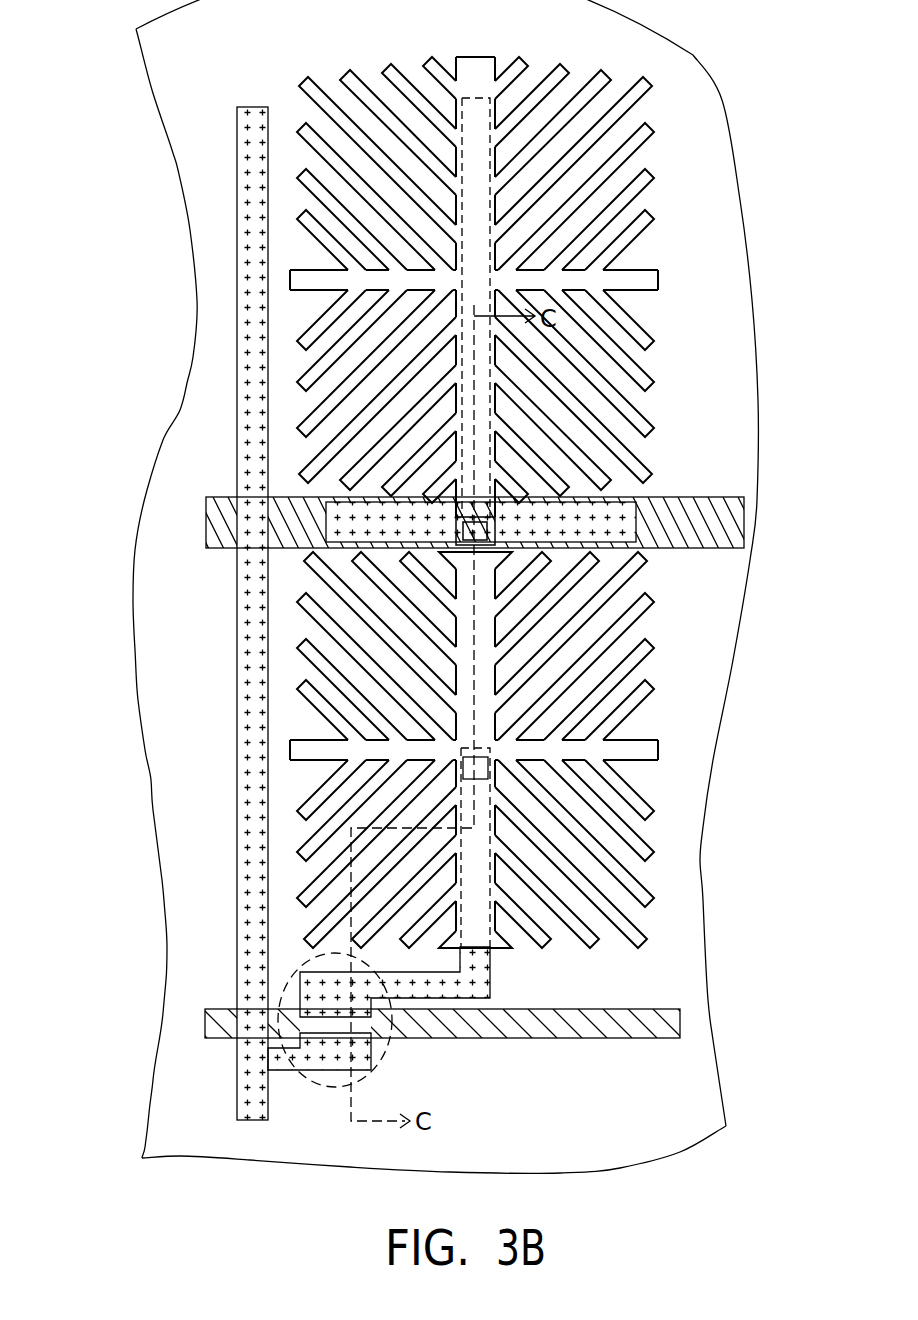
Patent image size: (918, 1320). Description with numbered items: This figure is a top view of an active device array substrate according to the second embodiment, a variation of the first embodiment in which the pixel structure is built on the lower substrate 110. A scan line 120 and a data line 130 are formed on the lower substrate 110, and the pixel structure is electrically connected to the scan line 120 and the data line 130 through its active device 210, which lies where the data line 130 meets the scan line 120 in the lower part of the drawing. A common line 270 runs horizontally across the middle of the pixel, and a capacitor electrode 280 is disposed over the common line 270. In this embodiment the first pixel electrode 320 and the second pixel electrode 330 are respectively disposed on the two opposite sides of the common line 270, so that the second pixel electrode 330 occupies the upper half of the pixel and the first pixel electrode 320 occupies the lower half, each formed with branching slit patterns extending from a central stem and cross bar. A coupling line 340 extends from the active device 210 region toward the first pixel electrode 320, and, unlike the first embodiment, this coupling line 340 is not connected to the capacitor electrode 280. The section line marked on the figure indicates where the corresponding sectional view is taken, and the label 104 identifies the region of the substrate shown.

The pixel structure 104 is at (806, 1211).
The lower substrate 110 is at (625, 1105).
The scan line 120 is at (660, 1025).
The data line 130 is at (253, 851).
The active device 210 is at (300, 1086).
The common line 270 is at (222, 525).
The capacitor electrode 280 is at (328, 508).
The first pixel electrode 320 is at (308, 647).
The second pixel electrode 330 is at (303, 188).
The coupling line 340 is at (478, 978).